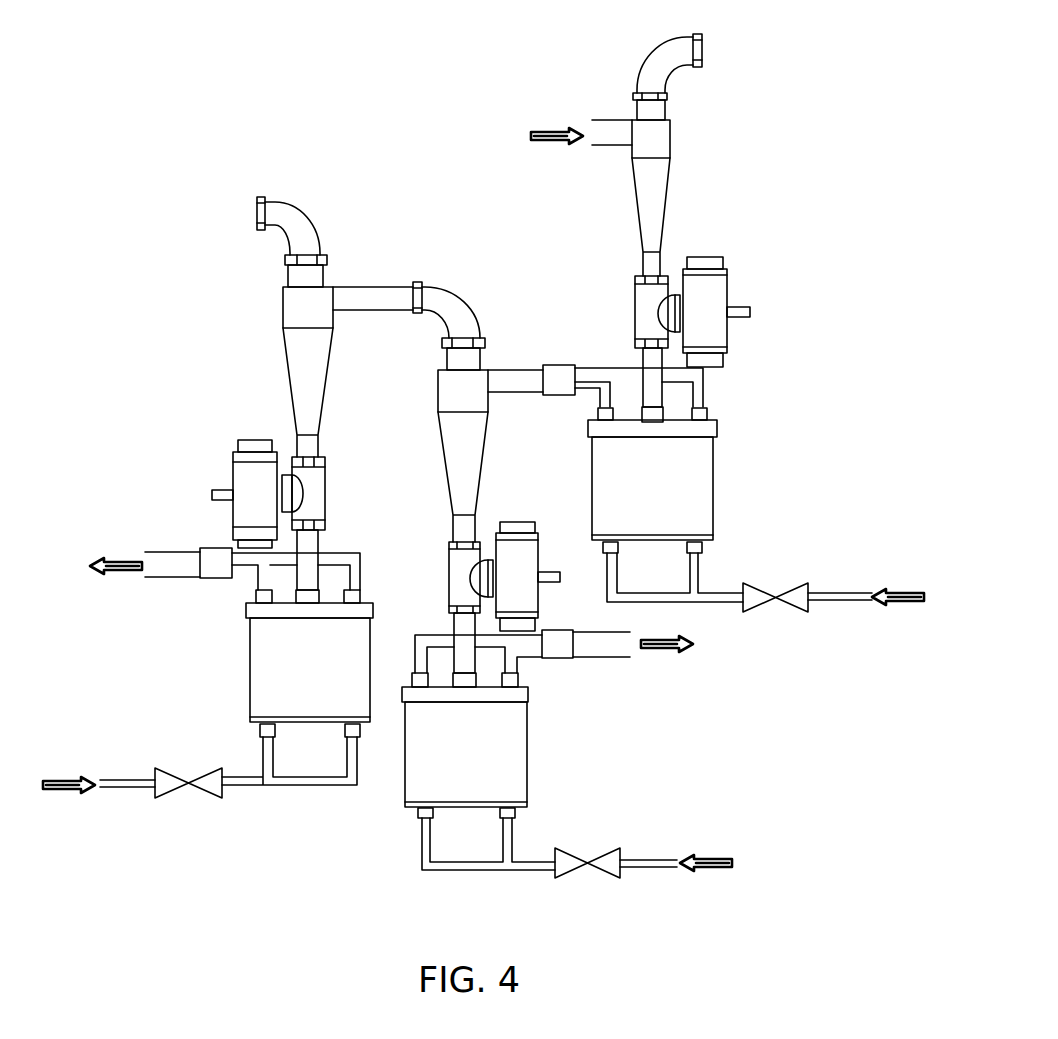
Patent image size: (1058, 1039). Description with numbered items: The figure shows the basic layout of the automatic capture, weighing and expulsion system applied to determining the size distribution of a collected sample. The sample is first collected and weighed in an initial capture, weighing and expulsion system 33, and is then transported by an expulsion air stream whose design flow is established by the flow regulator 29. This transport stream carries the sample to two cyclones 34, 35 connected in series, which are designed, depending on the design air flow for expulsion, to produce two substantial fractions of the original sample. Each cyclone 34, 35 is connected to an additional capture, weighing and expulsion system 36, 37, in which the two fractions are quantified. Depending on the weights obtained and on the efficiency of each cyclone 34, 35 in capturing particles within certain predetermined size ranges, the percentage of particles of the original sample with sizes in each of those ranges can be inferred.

The flow regulator 29 is at (775, 597).
The initial capture, weighing and expulsion system 33 is at (692, 482).
The cyclone 34 is at (487, 452).
The cyclone 35 is at (330, 362).
The capture, weighing and expulsion system 36 is at (500, 741).
The capture, weighing and expulsion system 37 is at (275, 659).